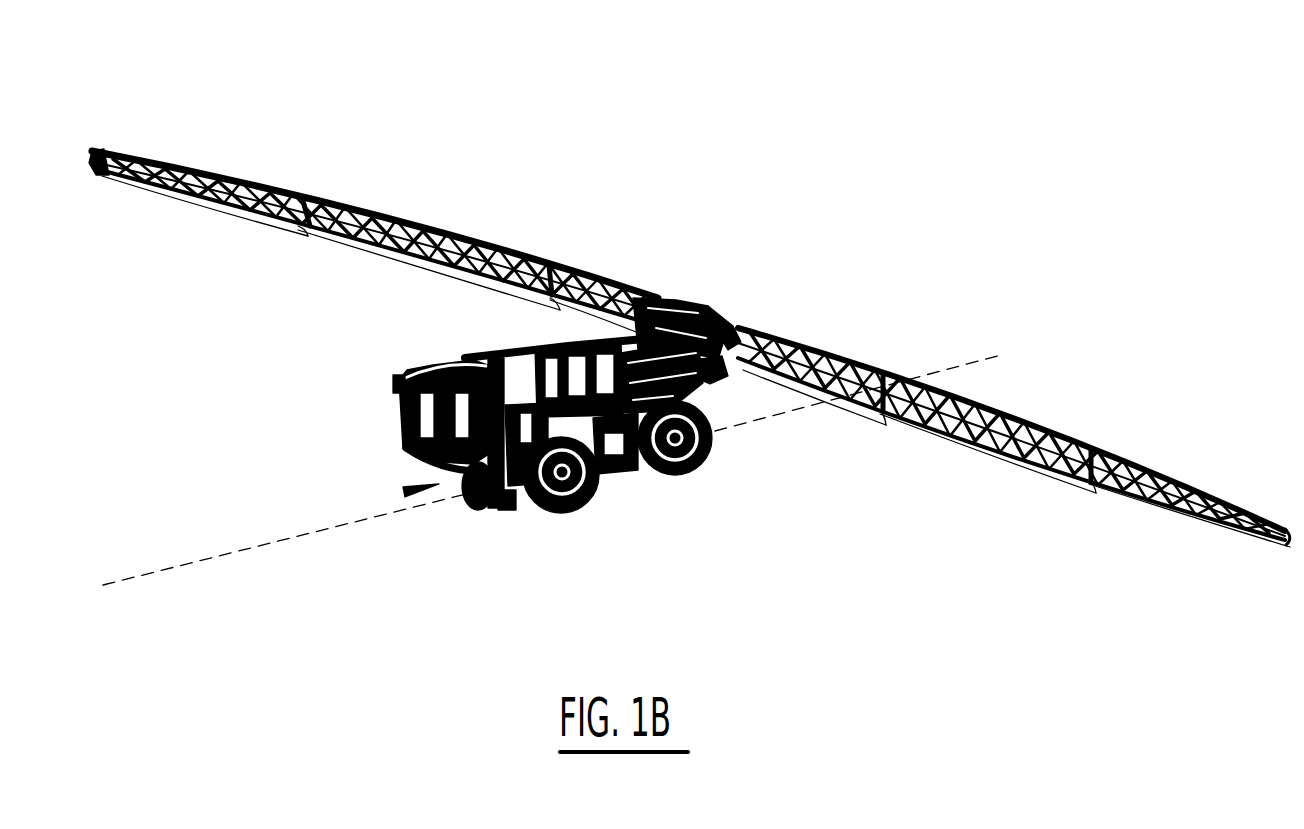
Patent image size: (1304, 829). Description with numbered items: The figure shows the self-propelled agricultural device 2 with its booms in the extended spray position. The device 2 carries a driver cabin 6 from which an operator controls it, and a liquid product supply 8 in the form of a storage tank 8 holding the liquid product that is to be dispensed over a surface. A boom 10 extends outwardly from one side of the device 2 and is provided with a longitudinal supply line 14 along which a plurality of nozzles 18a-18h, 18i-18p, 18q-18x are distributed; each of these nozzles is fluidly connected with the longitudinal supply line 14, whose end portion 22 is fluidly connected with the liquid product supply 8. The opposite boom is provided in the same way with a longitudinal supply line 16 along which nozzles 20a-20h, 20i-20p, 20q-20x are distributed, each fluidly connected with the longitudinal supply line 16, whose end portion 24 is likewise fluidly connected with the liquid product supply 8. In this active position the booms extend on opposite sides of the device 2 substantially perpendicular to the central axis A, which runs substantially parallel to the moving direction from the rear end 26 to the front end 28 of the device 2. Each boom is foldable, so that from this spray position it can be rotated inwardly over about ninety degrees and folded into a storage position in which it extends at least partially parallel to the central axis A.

The agricultural device 2 is at (826, 130).
The driver cabin 6 is at (408, 402).
The liquid product supply 8 is at (603, 372).
The boom 10 is at (804, 322).
The longitudinal supply line 14 is at (1040, 423).
The longitudinal supply line 16 is at (319, 192).
The nozzles 18a-18h is at (772, 404).
The nozzles 18i-18p is at (953, 455).
The nozzles 18q-18x is at (1168, 515).
The nozzles 20a-20h is at (558, 282).
The nozzles 20i-20p is at (392, 262).
The nozzles 20q-20x is at (181, 198).
The end portion 22 is at (707, 354).
The end portion 24 is at (655, 280).
The rear end 26 is at (696, 282).
The front end 28 is at (394, 483).
The central axis A is at (552, 453).